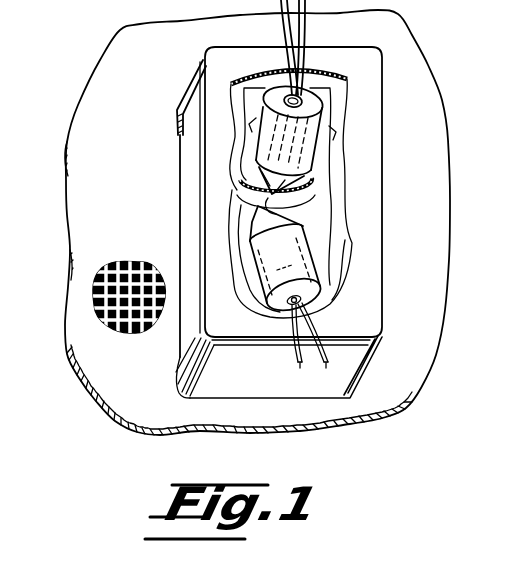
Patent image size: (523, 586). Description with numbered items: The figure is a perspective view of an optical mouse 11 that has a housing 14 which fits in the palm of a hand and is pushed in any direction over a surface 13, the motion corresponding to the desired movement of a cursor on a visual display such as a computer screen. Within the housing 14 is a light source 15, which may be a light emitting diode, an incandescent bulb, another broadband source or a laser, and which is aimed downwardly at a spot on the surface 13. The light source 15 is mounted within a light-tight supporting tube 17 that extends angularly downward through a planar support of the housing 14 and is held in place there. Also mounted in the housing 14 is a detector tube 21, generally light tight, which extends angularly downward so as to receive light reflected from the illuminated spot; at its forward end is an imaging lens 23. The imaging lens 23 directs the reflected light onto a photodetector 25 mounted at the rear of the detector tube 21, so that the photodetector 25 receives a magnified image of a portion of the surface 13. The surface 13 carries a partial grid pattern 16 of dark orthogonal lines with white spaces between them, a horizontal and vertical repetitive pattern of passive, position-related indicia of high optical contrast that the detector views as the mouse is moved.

The optical mouse 11 is at (422, 130).
The surface 13 is at (101, 211).
The housing 14 is at (370, 68).
The light source 15 is at (262, 198).
The partial grid pattern 16 is at (148, 266).
The supporting tube 17 is at (322, 136).
The detector tube 21 is at (315, 264).
The imaging lens 23 is at (292, 199).
The photodetector 25 is at (285, 312).